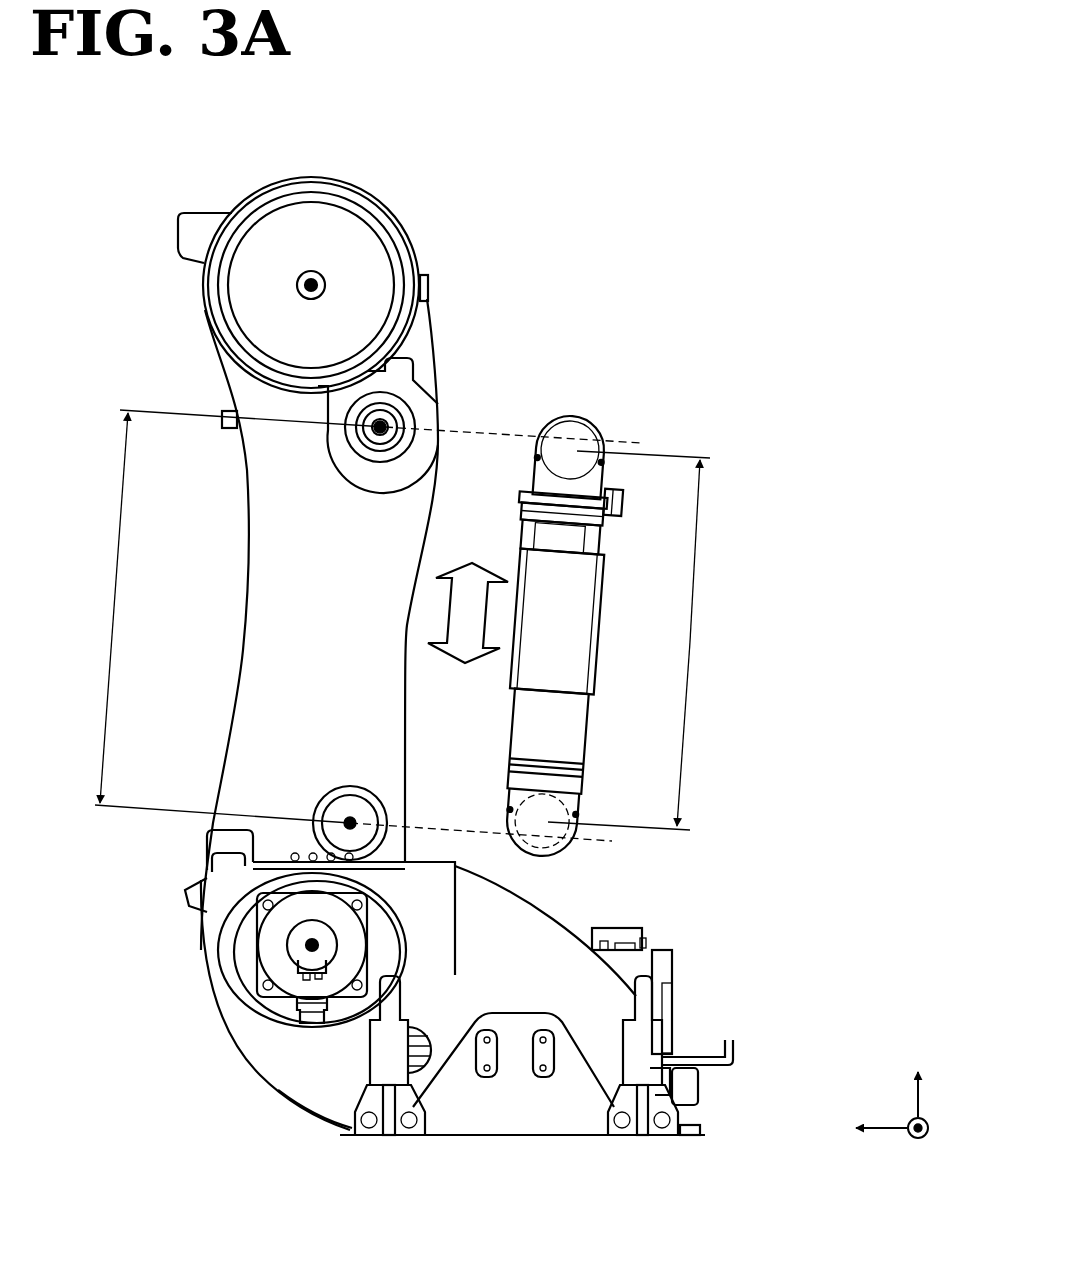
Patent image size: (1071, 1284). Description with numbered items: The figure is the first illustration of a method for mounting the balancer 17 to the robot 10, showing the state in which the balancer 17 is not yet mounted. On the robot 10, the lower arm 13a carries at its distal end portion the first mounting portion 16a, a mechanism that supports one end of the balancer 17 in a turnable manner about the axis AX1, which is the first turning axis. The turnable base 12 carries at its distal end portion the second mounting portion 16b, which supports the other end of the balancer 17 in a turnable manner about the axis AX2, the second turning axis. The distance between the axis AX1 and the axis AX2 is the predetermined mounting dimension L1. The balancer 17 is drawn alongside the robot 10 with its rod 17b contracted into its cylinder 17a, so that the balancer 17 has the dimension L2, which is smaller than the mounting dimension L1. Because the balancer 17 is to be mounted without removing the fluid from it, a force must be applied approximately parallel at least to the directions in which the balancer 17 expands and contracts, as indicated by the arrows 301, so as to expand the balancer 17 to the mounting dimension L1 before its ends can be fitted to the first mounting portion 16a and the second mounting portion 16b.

The robot 10 is at (440, 191).
The turnable base 12 is at (531, 930).
The lower arm 13a is at (246, 392).
The first mounting portion 16a is at (424, 380).
The second mounting portion 16b is at (386, 862).
The balancer 17 is at (612, 414).
The cylinder 17a is at (605, 546).
The rod 17b is at (568, 735).
The arrows 301 is at (470, 562).
The axis AX1 is at (394, 422).
The axis AX2 is at (358, 818).
The predetermined mounting dimension L1 is at (99, 608).
The dimension L2 is at (638, 640).